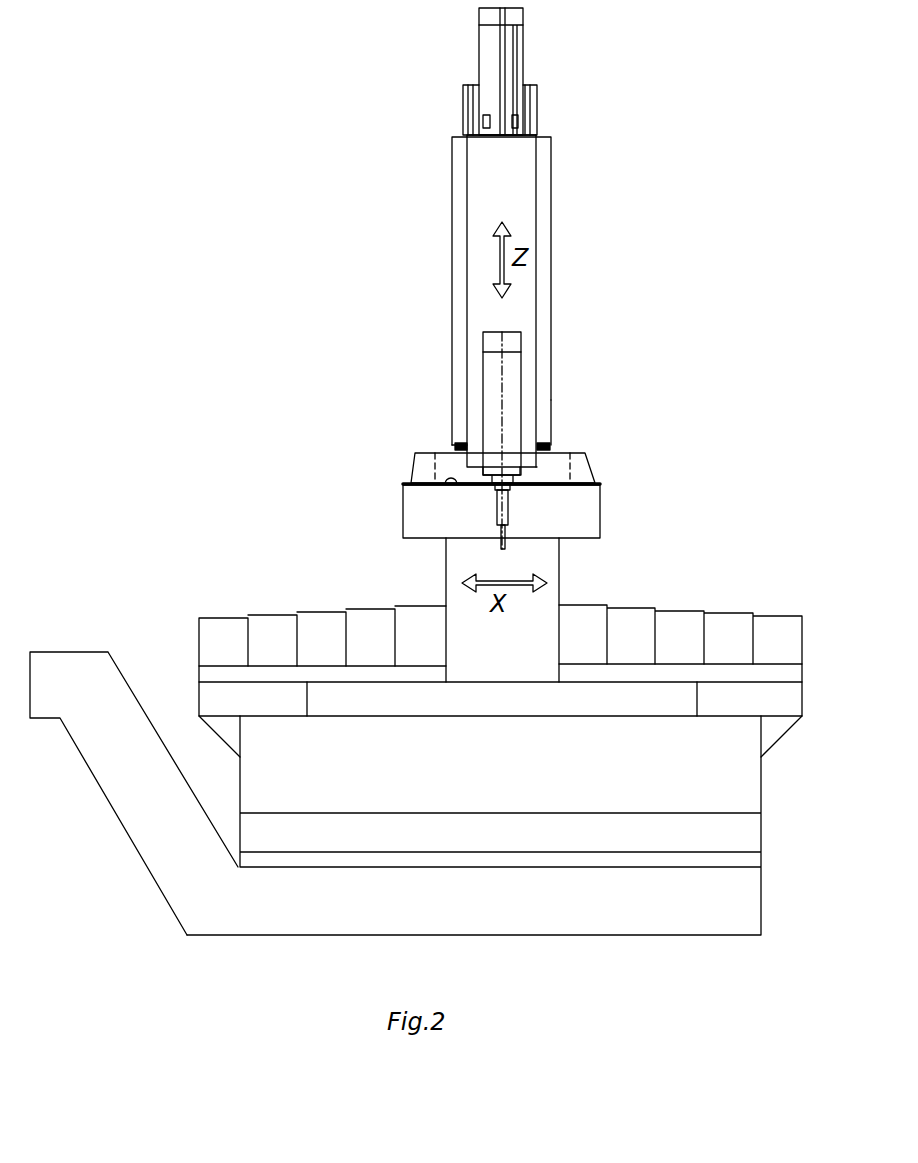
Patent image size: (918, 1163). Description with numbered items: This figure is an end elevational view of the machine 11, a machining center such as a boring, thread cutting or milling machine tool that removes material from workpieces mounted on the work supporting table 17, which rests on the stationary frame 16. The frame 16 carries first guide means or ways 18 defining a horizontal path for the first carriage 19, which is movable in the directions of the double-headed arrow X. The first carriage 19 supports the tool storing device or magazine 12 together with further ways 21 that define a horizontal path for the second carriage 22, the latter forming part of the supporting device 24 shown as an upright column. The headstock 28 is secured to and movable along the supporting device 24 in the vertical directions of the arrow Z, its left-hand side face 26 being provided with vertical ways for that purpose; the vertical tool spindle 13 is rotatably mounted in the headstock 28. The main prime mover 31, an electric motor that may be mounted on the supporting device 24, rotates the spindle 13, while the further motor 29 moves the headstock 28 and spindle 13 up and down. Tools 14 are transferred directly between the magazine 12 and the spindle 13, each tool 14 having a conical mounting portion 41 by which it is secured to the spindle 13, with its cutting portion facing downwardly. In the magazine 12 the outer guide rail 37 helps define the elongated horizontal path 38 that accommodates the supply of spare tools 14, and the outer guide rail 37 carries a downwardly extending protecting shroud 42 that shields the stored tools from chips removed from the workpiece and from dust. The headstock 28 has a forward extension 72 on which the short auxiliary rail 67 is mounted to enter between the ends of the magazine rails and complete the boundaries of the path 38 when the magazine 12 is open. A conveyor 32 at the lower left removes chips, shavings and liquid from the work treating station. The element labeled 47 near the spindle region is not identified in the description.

The machine 11 is at (380, 163).
The tool storing device 12 is at (594, 467).
The vertical tool spindle 13 is at (508, 517).
The tool 14 is at (424, 468).
The stationary frame 16 is at (642, 836).
The work supporting table 17 is at (500, 717).
The first guide means 18 is at (430, 670).
The first carriage 19 is at (540, 668).
The guide means 21 is at (540, 450).
The second carriage 22 is at (548, 437).
The supporting device 24 is at (550, 201).
The left-hand side face 26 is at (543, 153).
The headstock 28 is at (527, 229).
The further motor 29 is at (518, 38).
The main prime mover 31 is at (540, 108).
The conveyor 32 is at (115, 795).
The outer guide rail 37 is at (422, 487).
The elongated path 38 is at (457, 486).
The conical mounting portion 41 is at (445, 454).
The protecting shroud 42 is at (595, 503).
The spindle head line 47 is at (503, 351).
The auxiliary rail 67 is at (490, 490).
The forward extension 72 is at (487, 381).